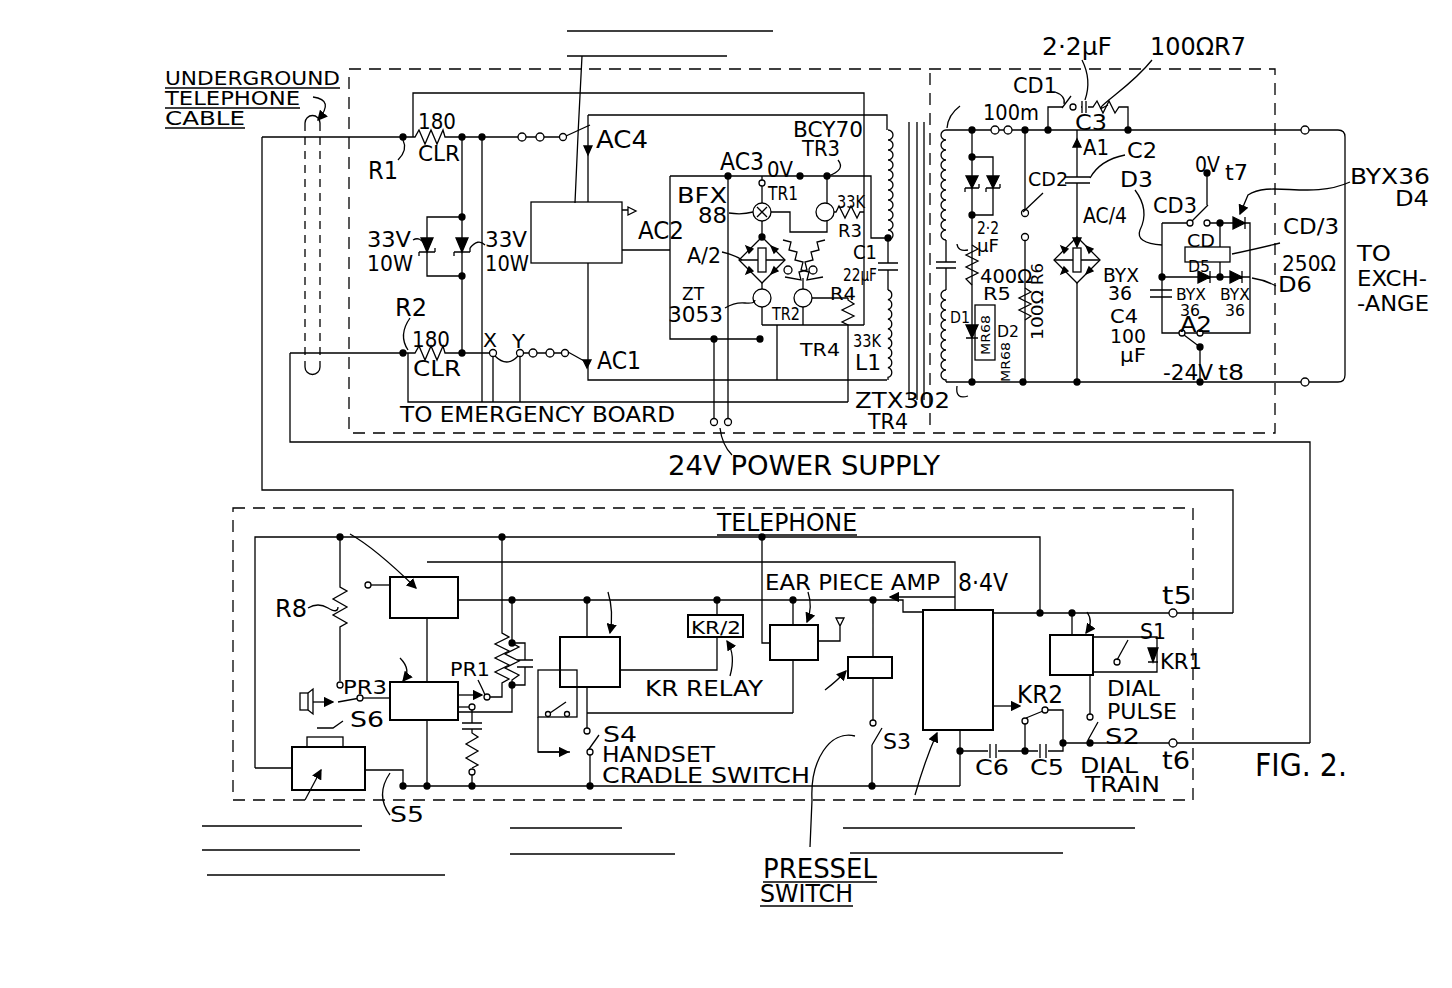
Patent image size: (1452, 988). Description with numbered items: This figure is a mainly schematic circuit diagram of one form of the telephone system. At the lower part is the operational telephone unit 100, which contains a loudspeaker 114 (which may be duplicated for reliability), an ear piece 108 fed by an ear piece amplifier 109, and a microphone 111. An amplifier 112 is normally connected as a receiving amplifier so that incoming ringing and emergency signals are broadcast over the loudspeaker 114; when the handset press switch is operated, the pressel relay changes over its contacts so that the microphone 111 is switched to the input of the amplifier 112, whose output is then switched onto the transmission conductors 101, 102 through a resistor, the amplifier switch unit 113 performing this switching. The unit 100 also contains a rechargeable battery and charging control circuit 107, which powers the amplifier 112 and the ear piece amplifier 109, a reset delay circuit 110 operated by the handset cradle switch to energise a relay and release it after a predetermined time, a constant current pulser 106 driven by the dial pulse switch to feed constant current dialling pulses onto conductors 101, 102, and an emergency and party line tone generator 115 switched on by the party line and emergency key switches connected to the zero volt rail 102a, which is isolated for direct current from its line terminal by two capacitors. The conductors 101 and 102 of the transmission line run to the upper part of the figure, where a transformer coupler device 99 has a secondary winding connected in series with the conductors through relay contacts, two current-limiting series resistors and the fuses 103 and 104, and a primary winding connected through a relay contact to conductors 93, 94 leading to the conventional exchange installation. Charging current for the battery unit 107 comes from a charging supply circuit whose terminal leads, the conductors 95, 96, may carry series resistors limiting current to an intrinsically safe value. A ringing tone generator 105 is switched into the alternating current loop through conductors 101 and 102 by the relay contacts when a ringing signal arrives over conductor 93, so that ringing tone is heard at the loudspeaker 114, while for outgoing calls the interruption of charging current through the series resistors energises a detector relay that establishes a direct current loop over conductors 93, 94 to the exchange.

The conductor 93 is at (1190, 120).
The conductor 94 is at (1137, 388).
The conductor 95 is at (717, 358).
The conductor 96 is at (712, 358).
The transformer coupler device 99 is at (920, 118).
The operational telephone unit 100 is at (440, 800).
The transmission line conductor 101 is at (262, 137).
The transmission line conductor 102 is at (290, 353).
The zero volt rail 102a is at (710, 788).
The fuse 103 is at (543, 140).
The fuse 104 is at (530, 337).
The ringing tone generator 105 is at (604, 180).
The constant current pulser 106 is at (1050, 655).
The battery and charging control circuit 107 is at (989, 732).
The ear piece 108 is at (843, 622).
The ear piece amplifier 109 is at (794, 652).
The reset delay circuit 110 is at (622, 655).
The microphone 111 is at (478, 760).
The amplifier 112 is at (407, 677).
The amplifier switch unit 113 is at (463, 563).
The loudspeaker 114 is at (300, 700).
The emergency and party line tone generator 115 is at (384, 760).